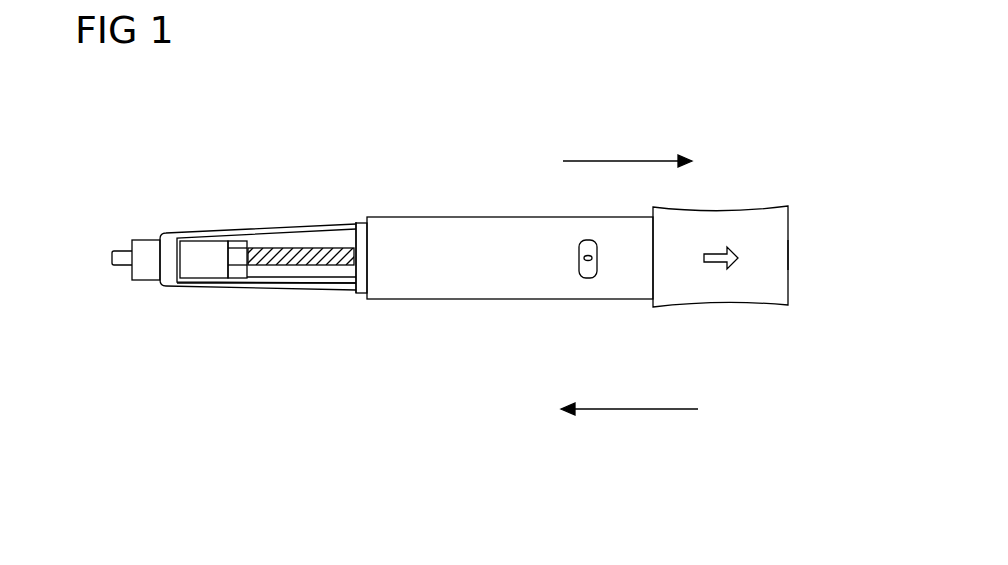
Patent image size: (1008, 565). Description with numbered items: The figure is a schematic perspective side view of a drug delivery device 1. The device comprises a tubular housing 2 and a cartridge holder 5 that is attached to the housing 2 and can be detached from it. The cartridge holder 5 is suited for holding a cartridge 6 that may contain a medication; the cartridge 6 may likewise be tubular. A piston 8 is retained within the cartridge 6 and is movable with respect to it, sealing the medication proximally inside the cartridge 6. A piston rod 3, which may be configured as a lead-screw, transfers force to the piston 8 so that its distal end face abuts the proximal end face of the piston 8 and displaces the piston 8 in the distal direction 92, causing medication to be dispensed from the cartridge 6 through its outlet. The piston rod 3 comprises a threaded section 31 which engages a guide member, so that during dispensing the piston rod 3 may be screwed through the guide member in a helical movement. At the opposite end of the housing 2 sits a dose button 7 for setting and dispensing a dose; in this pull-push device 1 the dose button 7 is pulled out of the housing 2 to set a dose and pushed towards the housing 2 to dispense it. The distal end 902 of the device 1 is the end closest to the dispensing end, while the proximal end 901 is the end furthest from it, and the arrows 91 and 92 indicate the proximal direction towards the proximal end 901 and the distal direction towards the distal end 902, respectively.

The drug delivery device 1 is at (368, 168).
The housing 2 is at (418, 278).
The piston rod 3 is at (254, 250).
The threaded section 31 is at (296, 252).
The cartridge holder 5 is at (270, 283).
The cartridge 6 is at (305, 277).
The dose button 7 is at (708, 289).
The piston 8 is at (198, 270).
The arrow indicating proximal direction 91 is at (624, 158).
The arrow indicating distal direction 92 is at (636, 409).
The proximal end 901 is at (788, 257).
The distal end 902 is at (110, 258).